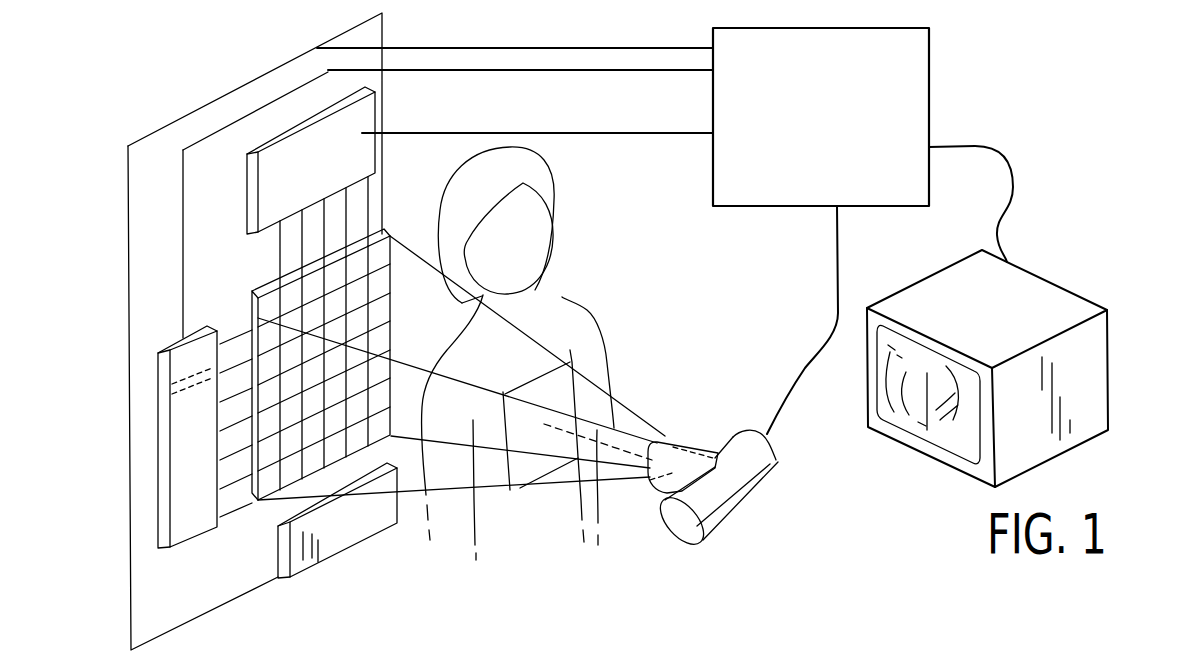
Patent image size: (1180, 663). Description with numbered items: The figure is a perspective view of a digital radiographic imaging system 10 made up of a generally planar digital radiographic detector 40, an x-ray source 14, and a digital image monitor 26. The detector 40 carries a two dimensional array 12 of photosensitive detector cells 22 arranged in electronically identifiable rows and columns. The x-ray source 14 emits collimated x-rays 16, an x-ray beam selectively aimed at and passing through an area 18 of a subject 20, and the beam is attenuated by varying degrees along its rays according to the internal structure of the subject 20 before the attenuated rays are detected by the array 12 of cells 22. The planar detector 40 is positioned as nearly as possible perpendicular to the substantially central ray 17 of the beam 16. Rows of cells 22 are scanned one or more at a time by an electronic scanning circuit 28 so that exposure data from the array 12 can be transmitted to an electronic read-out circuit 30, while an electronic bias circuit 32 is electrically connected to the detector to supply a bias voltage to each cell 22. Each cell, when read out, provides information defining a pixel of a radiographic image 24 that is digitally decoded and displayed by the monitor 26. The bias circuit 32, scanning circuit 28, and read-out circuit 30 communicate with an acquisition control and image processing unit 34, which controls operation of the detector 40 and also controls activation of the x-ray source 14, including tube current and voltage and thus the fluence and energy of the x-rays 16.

The digital radiographic imaging system 10 is at (1068, 104).
The two dimensional array of detector cells 12 is at (383, 230).
The x-ray source 14 is at (766, 477).
The x-rays 16 is at (637, 408).
The central ray 17 is at (622, 450).
The area of the subject 18 is at (590, 327).
The subject 20 is at (567, 297).
The detector cells 22 is at (288, 302).
The radiographic image 24 is at (935, 433).
The digital image monitor 26 is at (1040, 302).
The electronic scanning circuit 28 is at (192, 530).
The electronic read-out circuit 30 is at (290, 157).
The electronic bias circuit 32 is at (330, 547).
The acquisition control and image processing unit 34 is at (929, 90).
The digital radiographic detector 40 is at (110, 107).